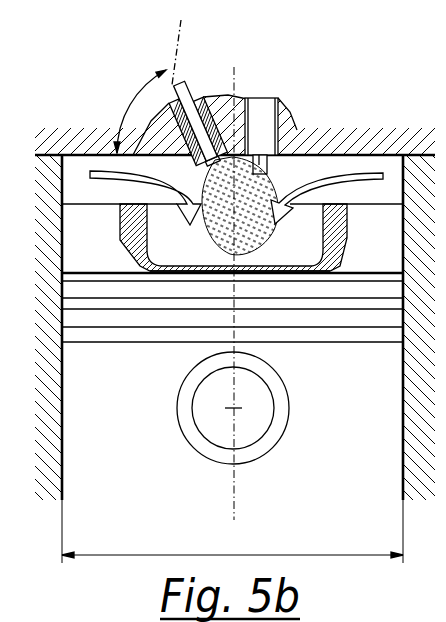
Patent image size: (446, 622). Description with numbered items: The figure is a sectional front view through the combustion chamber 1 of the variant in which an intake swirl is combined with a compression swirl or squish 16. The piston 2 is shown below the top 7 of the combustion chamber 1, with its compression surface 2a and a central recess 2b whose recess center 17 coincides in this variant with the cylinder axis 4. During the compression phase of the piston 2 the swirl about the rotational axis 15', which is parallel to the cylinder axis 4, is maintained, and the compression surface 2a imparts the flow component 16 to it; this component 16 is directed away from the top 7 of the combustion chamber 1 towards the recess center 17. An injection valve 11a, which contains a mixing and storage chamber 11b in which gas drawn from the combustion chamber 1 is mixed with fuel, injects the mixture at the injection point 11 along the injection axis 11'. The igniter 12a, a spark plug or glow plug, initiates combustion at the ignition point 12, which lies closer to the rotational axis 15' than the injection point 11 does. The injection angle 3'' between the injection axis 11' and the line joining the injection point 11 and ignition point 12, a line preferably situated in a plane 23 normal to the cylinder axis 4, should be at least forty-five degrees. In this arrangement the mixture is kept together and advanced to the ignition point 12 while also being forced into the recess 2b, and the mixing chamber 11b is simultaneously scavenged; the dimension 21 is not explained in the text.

The combustion chamber 1 is at (80, 188).
The piston 2 is at (360, 443).
The compression surface 2a is at (382, 207).
The recess 2b is at (310, 254).
The injection angle 3'' is at (133, 111).
The cylinder axis 4 is at (236, 474).
The top of the combustion chamber 7 is at (383, 160).
The injection point 11 is at (244, 101).
The injection axis 11' is at (182, 45).
The injection valve 11a is at (213, 103).
The mixing and storage chamber 11b is at (194, 100).
The ignition point 12 is at (268, 157).
The igniter 12a is at (278, 99).
The rotational axis 15' is at (255, 408).
The compression swirl or squish 16 is at (289, 205).
The recess center 17 is at (238, 259).
The piston diameter 21 is at (160, 555).
The plane normal to the cylinder axis 23 is at (360, 155).